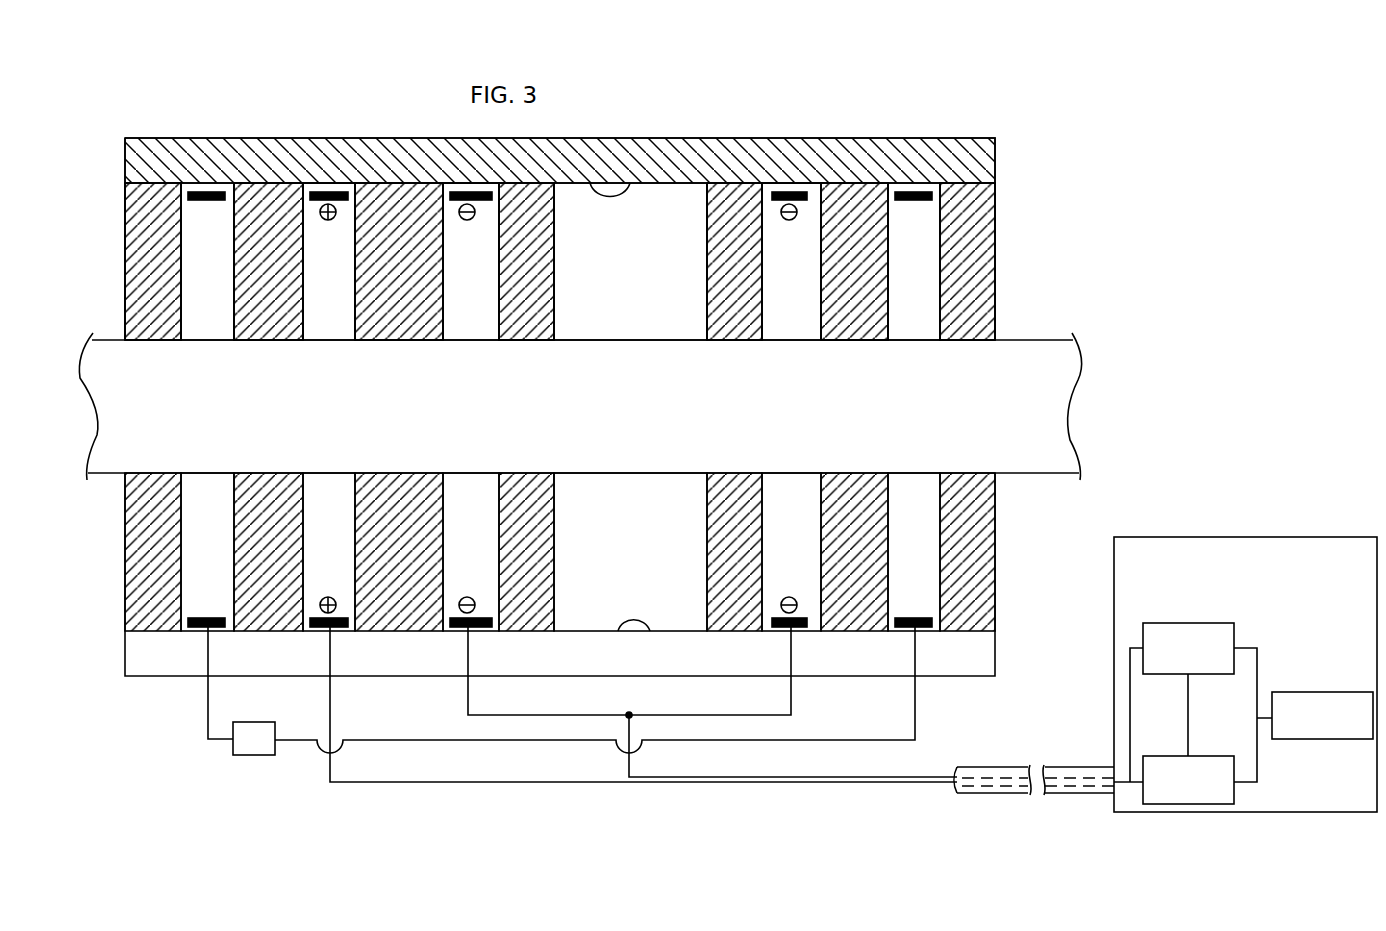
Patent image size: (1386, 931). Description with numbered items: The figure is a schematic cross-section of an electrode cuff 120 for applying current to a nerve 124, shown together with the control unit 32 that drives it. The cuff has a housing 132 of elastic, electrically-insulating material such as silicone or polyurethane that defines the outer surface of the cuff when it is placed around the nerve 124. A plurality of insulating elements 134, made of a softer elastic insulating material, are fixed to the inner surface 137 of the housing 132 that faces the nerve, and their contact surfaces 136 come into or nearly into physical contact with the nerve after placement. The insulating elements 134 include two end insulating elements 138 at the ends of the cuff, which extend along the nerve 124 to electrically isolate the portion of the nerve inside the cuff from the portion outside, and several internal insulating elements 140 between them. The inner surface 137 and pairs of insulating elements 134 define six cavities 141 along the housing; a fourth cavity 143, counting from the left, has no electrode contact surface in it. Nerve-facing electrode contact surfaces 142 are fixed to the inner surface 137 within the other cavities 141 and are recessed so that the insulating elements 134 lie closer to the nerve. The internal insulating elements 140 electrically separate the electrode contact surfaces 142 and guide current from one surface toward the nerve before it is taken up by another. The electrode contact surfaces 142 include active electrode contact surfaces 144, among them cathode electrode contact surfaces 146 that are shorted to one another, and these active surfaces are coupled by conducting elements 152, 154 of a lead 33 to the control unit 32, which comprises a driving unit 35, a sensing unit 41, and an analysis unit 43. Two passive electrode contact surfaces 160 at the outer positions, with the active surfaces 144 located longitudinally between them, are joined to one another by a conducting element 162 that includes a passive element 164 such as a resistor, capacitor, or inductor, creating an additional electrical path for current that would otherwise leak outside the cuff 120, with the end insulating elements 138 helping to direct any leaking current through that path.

The electrode cuff 120 is at (1028, 138).
The nerve 124 is at (1040, 346).
The housing 132 is at (785, 138).
The insulating elements 134 is at (142, 248).
The contact surfaces 136 is at (527, 342).
The inner surface 137 is at (598, 183).
The end insulating elements 138 is at (142, 278).
The internal insulating elements 140 is at (275, 255).
The cavities 141 is at (226, 322).
The nerve-facing electrode contact surfaces 142 is at (217, 617).
The fourth cavity 143 is at (650, 226).
The active electrode contact surfaces 144 is at (308, 183).
The cathode electrode contact surfaces 146 is at (330, 192).
The conducting element 152 is at (430, 784).
The conducting element 154 is at (810, 777).
The passive electrode contact surfaces 160 is at (206, 192).
The conducting element 162 is at (500, 745).
The passive element 164 is at (258, 757).
The control unit 32 is at (1188, 537).
The lead 33 is at (995, 768).
The driving unit 35 is at (1234, 798).
The sensing unit 41 is at (1234, 631).
The analysis unit 43 is at (1318, 692).